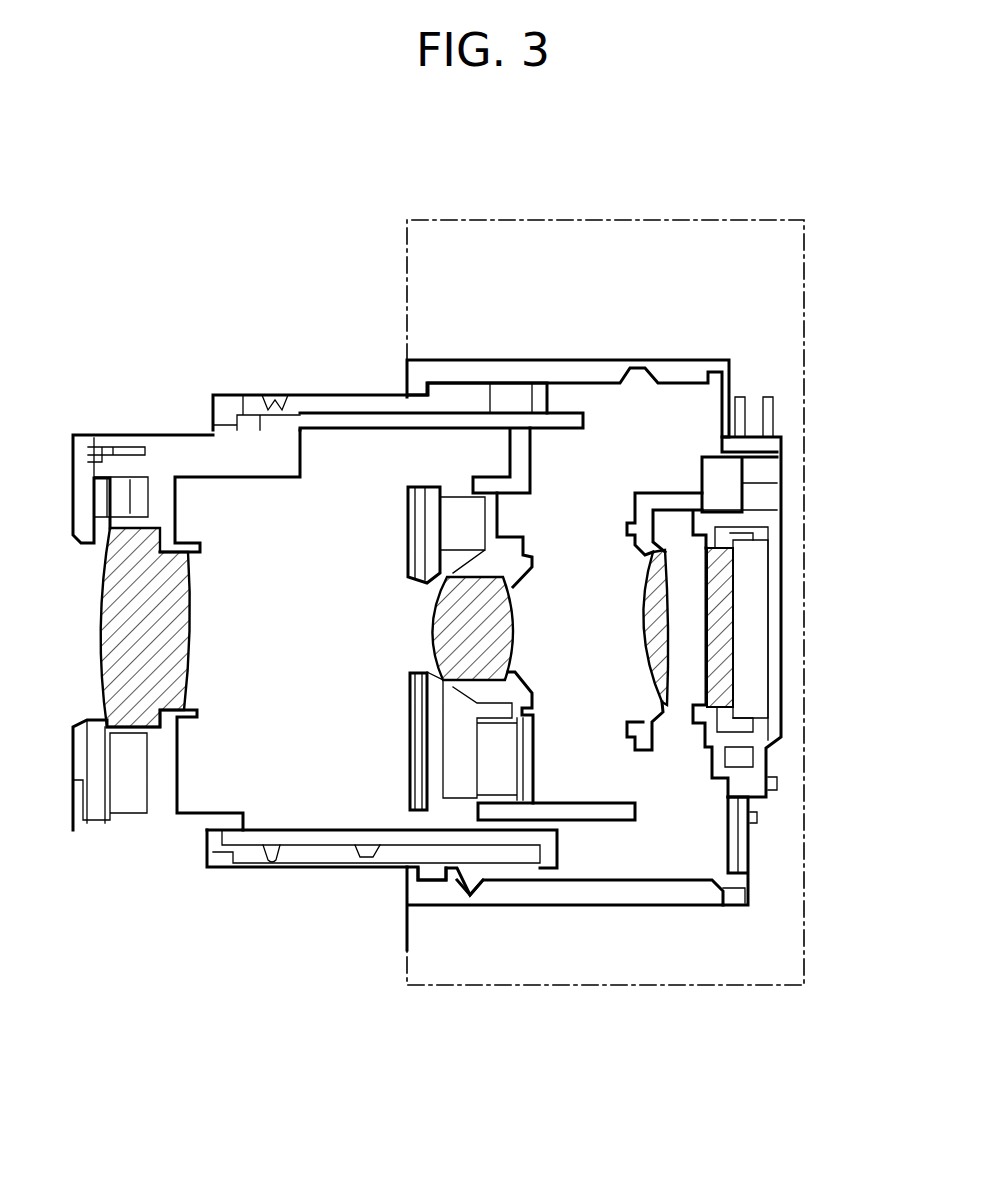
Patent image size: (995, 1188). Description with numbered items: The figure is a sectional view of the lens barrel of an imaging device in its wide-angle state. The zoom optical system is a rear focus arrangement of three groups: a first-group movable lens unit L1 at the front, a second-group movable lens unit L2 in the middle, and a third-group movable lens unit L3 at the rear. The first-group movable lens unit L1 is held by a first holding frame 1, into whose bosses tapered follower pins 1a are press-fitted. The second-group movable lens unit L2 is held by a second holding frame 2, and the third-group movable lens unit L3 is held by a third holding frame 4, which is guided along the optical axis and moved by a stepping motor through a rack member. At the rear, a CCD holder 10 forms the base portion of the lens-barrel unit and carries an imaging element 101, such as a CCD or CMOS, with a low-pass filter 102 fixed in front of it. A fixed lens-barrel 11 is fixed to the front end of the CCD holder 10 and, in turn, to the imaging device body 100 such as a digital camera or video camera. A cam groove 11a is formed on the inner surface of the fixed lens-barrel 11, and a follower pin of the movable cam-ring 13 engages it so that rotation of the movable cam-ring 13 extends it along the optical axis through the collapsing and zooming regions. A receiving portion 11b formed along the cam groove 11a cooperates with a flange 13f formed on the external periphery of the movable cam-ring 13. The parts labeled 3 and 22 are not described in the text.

The first holding frame 1 is at (167, 440).
The follower pin 1a is at (274, 395).
The second holding frame 2 is at (614, 822).
The second lens frame 3 is at (410, 745).
The third holding frame 4 is at (650, 493).
The CCD holder 10 is at (747, 847).
The fixed lens-barrel 11 is at (487, 358).
The cam groove 11a is at (473, 890).
The receiving portion 11b is at (450, 880).
The movable cam-ring 13 is at (333, 393).
The flange 13f is at (427, 868).
The spacer plate 22 is at (337, 432).
The imaging device body 100 is at (805, 272).
The imaging element 101 is at (755, 590).
The low-pass filter 102 is at (727, 643).
The first-group movable lens unit L1 is at (110, 598).
The second-group movable lens unit L2 is at (435, 628).
The third-group movable lens unit L3 is at (643, 628).